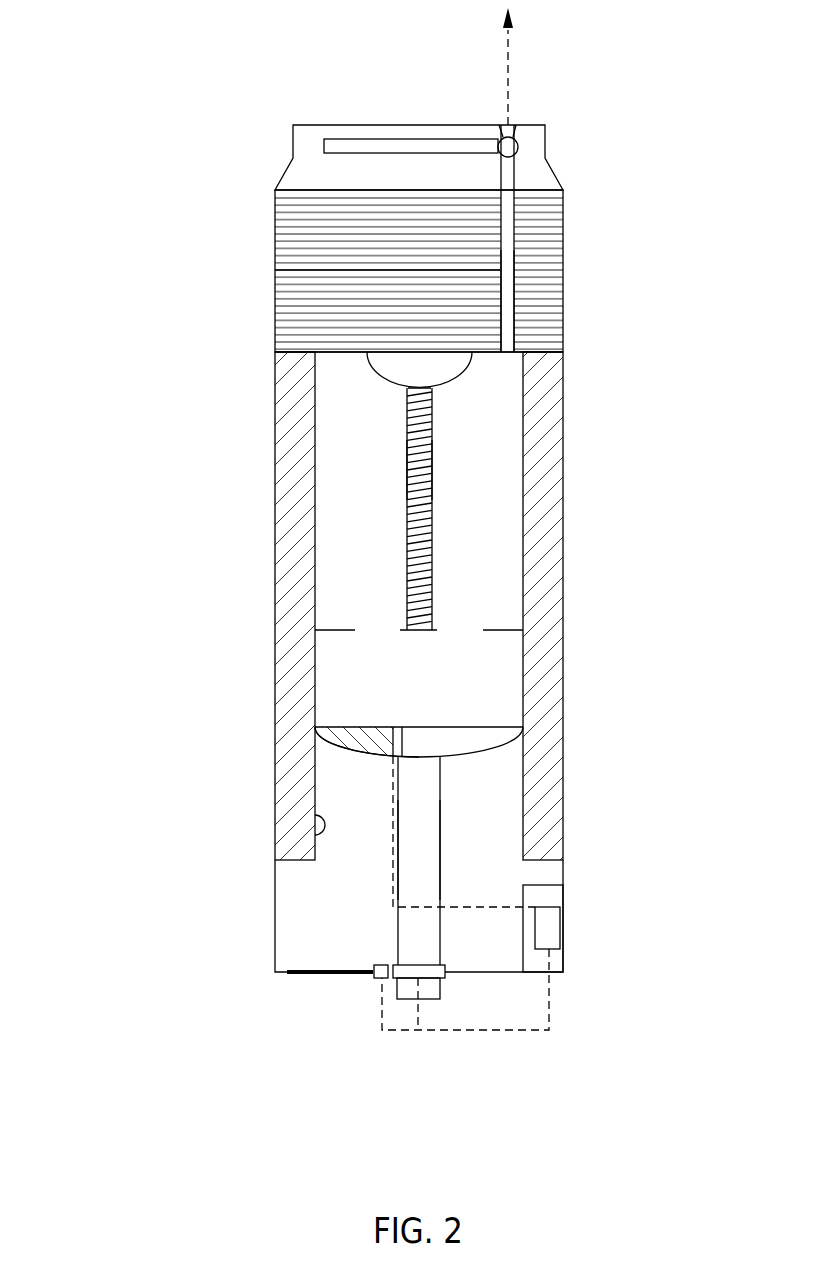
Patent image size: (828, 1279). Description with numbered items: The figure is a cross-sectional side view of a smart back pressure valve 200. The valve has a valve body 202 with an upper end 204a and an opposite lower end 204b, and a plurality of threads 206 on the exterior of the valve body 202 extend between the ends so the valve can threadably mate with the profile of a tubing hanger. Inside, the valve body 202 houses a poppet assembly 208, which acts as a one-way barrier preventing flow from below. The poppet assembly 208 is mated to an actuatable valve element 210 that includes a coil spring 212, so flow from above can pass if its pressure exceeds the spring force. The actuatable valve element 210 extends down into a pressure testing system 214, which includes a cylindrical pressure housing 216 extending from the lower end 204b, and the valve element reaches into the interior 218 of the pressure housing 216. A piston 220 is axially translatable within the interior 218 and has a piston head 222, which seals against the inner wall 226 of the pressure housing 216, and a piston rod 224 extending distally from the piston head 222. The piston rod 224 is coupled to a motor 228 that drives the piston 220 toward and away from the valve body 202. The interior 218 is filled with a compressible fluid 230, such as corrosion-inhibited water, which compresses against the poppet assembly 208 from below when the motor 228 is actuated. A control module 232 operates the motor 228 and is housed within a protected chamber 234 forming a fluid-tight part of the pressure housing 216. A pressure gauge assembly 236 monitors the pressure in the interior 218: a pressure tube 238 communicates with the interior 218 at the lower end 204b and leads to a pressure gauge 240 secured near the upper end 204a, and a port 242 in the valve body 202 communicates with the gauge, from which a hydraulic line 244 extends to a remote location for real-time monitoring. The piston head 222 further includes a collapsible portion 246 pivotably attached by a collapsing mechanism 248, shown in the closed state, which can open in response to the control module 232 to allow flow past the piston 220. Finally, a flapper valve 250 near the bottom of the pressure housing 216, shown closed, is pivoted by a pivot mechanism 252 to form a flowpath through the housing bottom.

The smart back pressure valve 200 is at (155, 77).
The valve body 202 is at (269, 268).
The upper end 204a is at (281, 135).
The lower end 204b is at (270, 354).
The threads 206 is at (275, 307).
The poppet assembly 208 is at (458, 387).
The actuatable valve element 210 is at (435, 533).
The coil spring 212 is at (427, 463).
The pressure testing system 214 is at (273, 556).
The pressure housing 216 is at (288, 668).
The interior 218 is at (343, 495).
The piston 220 is at (445, 818).
The piston head 222 is at (490, 752).
The piston rod 224 is at (432, 868).
The inner wall 226 is at (318, 838).
The motor 228 is at (443, 978).
The compressible fluid 230 is at (383, 574).
The control module 232 is at (574, 943).
The protected chamber 234 is at (563, 893).
The pressure gauge assembly 236 is at (526, 175).
The pressure tube 238 is at (515, 303).
The pressure gauge 240 is at (413, 139).
The port 242 is at (514, 125).
The hydraulic line 244 is at (505, 45).
The collapsible portion 246 is at (357, 753).
The collapsing mechanism 248 is at (393, 726).
The flapper valve 250 is at (310, 973).
The pivot mechanism 252 is at (378, 980).